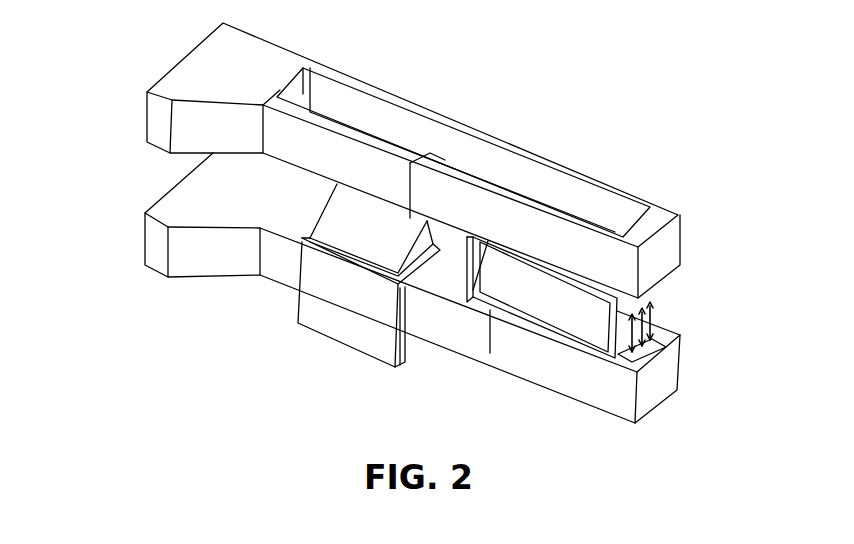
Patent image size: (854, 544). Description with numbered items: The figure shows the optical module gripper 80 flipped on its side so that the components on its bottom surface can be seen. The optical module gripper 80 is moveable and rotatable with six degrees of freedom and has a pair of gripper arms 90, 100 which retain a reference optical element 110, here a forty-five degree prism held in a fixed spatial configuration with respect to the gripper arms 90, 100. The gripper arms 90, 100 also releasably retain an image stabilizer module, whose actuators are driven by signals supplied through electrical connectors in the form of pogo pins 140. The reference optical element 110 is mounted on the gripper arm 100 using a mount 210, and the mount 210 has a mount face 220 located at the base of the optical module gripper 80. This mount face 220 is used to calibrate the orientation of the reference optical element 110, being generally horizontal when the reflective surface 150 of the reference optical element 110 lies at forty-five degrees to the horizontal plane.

The optical module gripper 80 is at (638, 140).
The gripper arm 90 is at (173, 78).
The gripper arm 100 is at (173, 205).
The reference optical element 110 is at (415, 238).
The pogo pins 140 is at (653, 338).
The reflective surface 150 is at (335, 223).
The mount 210 is at (405, 290).
The mount face 220 is at (337, 312).